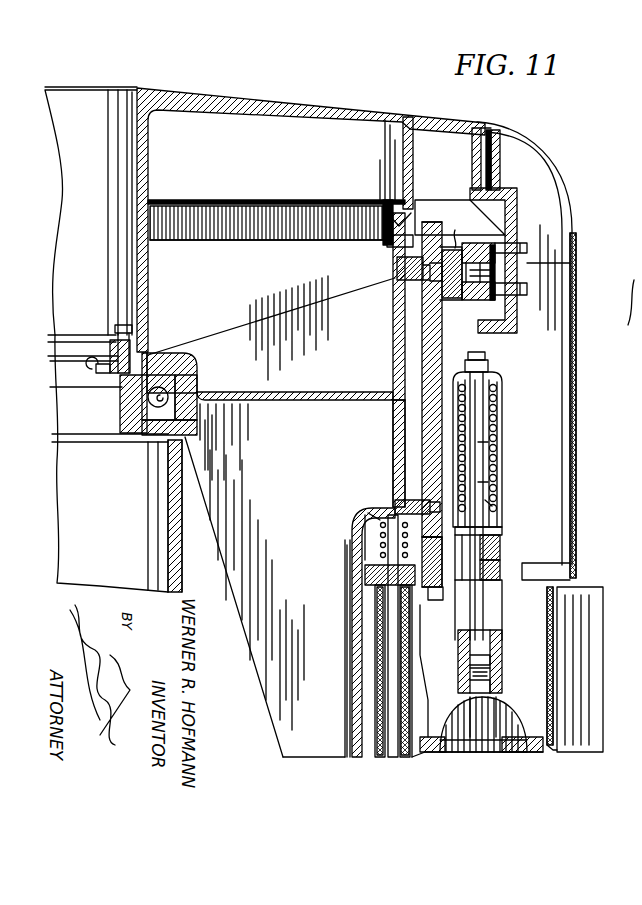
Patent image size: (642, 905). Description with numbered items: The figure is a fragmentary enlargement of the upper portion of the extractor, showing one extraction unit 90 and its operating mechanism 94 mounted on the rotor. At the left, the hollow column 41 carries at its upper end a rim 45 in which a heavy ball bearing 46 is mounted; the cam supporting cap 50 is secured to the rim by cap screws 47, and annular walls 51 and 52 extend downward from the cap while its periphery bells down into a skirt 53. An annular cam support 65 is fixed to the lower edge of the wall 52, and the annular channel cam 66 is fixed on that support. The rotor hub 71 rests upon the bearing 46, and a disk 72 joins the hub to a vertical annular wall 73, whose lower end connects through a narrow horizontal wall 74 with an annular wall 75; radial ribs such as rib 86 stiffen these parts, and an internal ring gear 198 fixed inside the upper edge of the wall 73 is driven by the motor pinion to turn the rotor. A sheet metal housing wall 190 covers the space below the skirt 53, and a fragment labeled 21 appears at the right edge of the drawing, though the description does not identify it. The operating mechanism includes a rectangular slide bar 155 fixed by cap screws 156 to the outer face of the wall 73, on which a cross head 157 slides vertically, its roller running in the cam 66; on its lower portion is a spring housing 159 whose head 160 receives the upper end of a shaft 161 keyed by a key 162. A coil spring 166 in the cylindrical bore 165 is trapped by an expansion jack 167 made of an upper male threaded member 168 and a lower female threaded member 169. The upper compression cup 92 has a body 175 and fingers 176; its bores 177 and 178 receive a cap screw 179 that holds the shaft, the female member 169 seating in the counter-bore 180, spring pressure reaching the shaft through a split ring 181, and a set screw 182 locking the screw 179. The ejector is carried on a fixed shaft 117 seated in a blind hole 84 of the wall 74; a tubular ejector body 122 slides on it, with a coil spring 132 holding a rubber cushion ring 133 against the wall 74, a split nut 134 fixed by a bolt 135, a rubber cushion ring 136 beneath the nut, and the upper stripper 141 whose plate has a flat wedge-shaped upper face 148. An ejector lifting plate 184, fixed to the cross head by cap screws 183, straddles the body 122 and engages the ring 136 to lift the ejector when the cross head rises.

The panel 21 is at (603, 606).
The hollow column 41 is at (168, 518).
The rim 45 is at (122, 404).
The ball bearing 46 is at (170, 385).
The cap screws 47 is at (118, 325).
The cam supporting cap 50 is at (174, 84).
The annular wall 51 is at (403, 158).
The annular wall 52 is at (472, 158).
The skirt 53 is at (548, 170).
The annular cam support 65 is at (517, 218).
The annular channel cam 66 is at (518, 290).
The hub 71 is at (190, 356).
The disk 72 is at (266, 402).
The vertical annular wall 73 is at (393, 420).
The narrow horizontal wall 74 is at (360, 508).
The annular wall 75 is at (350, 690).
The blind holes 84 is at (392, 506).
The radial rib 86 is at (232, 576).
The extraction unit 90 is at (560, 574).
The upper compression cup 92 is at (557, 672).
The operating mechanism 94 is at (396, 366).
The fixed shaft 117 is at (378, 630).
The tubular ejector body 122 is at (400, 658).
The coil spring 132 is at (380, 534).
The rubber cushion ring 133 is at (372, 516).
The split nut 134 is at (365, 575).
The bolt 135 is at (350, 556).
The rubber cushion ring 136 is at (375, 592).
The upper stripper 141 is at (530, 752).
The upper face 148 is at (627, 303).
The rectangular slide bar 155 is at (432, 346).
The cap screws 156 is at (397, 270).
The cross head 157 is at (511, 412).
The spring housing 159 is at (500, 447).
The head 160 is at (502, 380).
The shaft 161 is at (484, 478).
The key 162 is at (490, 366).
The cylindrical bore 165 is at (498, 503).
The coil spring 166 is at (498, 466).
The expansion jack 167 is at (500, 548).
The upper male threaded member 168 is at (456, 253).
The lower female threaded member 169 is at (500, 570).
The body 175 is at (492, 672).
The fingers 176 is at (527, 713).
The bore 177 is at (492, 660).
The bore 178 is at (509, 691).
The cap screw 179 is at (480, 680).
The counter-bore 180 is at (480, 642).
The split ring 181 is at (463, 643).
The set screw 182 is at (560, 648).
The cap screws 183 is at (434, 600).
The ejector lifting plate 184 is at (390, 606).
The housing wall 190 is at (576, 262).
The internal ring gear 198 is at (288, 255).